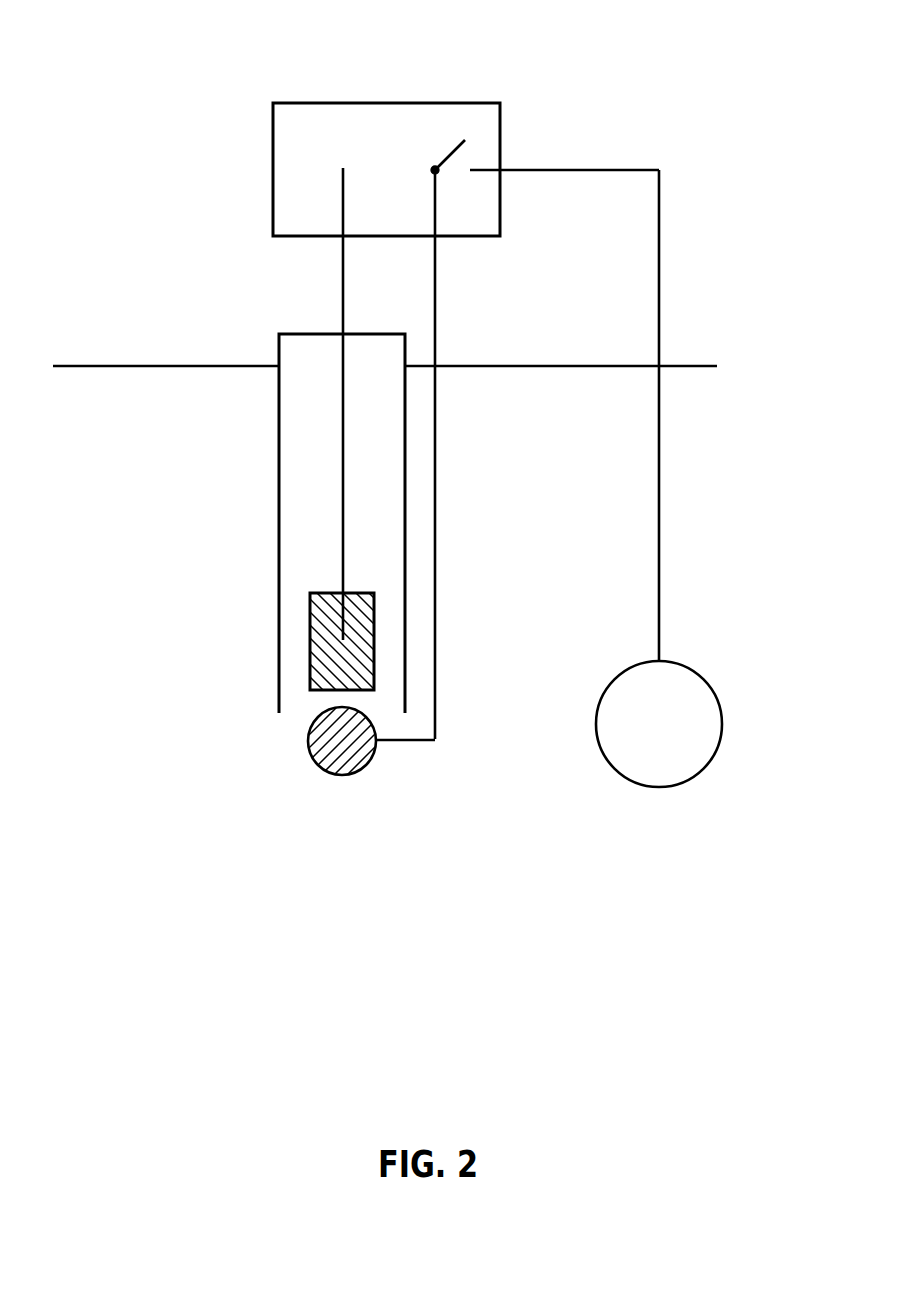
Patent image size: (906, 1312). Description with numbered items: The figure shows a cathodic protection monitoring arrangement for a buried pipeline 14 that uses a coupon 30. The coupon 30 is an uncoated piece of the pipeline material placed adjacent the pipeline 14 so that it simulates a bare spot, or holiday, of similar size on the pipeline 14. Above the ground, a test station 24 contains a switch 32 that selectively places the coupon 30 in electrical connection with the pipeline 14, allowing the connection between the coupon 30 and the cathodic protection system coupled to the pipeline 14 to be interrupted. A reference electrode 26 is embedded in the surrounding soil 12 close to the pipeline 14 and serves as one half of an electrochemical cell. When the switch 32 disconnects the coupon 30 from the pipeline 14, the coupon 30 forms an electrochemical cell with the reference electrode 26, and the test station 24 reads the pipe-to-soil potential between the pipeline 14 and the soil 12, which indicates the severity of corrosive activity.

The soil 12 is at (692, 364).
The pipeline 14 is at (705, 770).
The test station 24 is at (530, 80).
The reference electrode 26 is at (235, 515).
The coupon 30 is at (310, 757).
The switch 32 is at (462, 150).